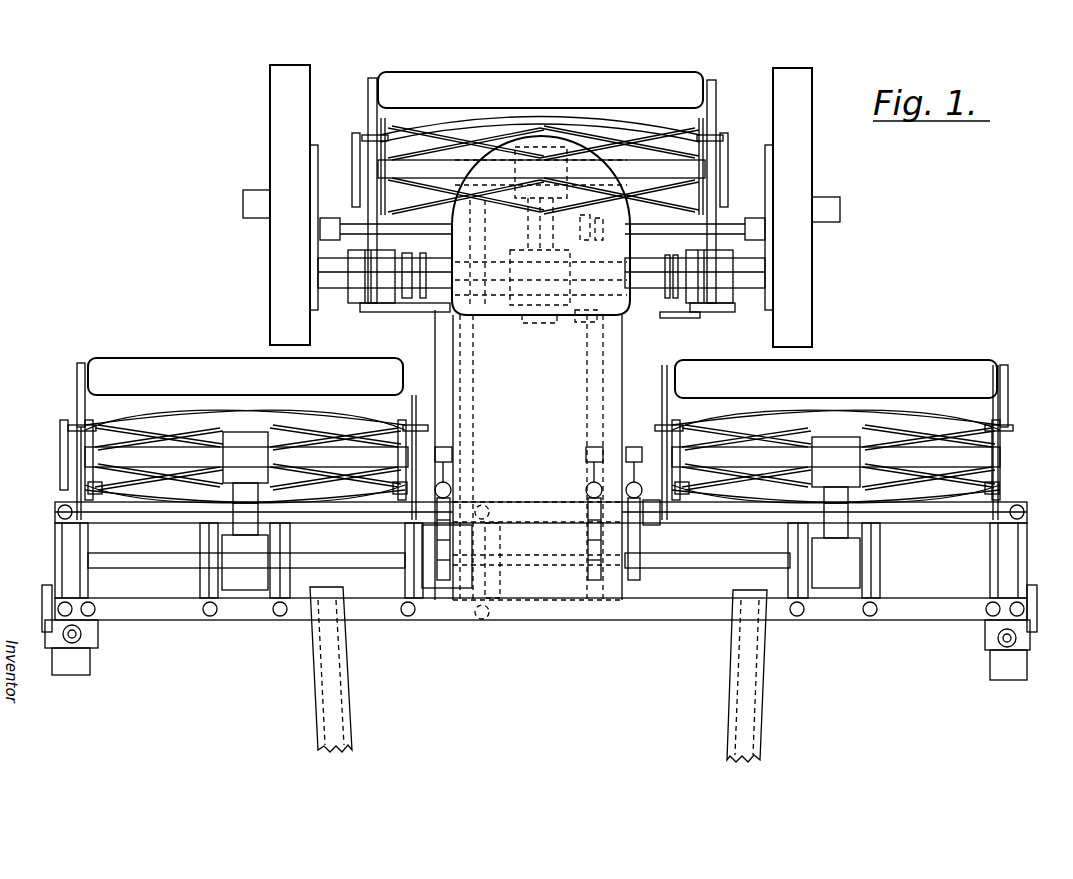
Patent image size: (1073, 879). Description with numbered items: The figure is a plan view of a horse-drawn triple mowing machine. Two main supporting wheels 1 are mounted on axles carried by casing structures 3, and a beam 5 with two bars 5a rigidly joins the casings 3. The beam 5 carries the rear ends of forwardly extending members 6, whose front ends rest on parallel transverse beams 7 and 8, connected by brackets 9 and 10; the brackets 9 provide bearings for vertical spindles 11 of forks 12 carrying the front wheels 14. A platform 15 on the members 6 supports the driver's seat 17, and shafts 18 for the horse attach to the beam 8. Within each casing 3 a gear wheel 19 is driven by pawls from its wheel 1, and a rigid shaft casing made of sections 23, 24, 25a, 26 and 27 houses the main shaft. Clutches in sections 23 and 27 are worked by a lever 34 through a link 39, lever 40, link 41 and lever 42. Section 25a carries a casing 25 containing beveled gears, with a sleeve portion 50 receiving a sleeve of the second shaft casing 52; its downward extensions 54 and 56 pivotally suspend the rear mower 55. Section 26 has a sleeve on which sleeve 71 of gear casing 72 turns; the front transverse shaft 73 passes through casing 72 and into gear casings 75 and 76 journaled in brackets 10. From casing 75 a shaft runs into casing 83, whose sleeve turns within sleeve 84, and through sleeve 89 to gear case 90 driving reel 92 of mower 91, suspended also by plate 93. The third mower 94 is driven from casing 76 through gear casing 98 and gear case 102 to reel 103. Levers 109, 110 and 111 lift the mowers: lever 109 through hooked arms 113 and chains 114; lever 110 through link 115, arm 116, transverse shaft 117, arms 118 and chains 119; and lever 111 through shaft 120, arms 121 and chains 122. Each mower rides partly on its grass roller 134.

The main supporting wheels 1 is at (272, 275).
The casing structures 3 is at (318, 162).
The beam 5 is at (336, 292).
The bars 5a is at (353, 223).
The forwardly extending members 6 is at (450, 333).
The transverse beam 7 is at (738, 524).
The transverse beam 8 is at (178, 620).
The brackets 9 is at (58, 542).
The brackets 10 is at (200, 568).
The vertical spindles 11 is at (65, 636).
The forks 12 is at (43, 598).
The wheels 14 is at (80, 660).
The platform 15 is at (537, 519).
The driver's seat 17 is at (541, 140).
The shafts 18 is at (350, 680).
The gear wheel 19 is at (1000, 662).
The shaft casing section 23 is at (723, 296).
The shaft casing section 24 is at (657, 281).
The casing 25 is at (515, 256).
The shaft casing section 25a is at (585, 322).
The shaft casing section 26 is at (425, 290).
The shaft casing section 27 is at (362, 295).
The lever 34 is at (692, 312).
The link 39 is at (672, 320).
The lever 40 is at (530, 318).
The link 41 is at (390, 312).
The lever 42 is at (368, 312).
The sleeve portion 50 is at (528, 213).
The second shaft casing 52 is at (515, 168).
The downward extension 54 is at (728, 188).
The mower 55 is at (497, 64).
The downward extension 56 is at (356, 182).
The sleeve 71 is at (437, 360).
The gear casing 72 is at (430, 547).
The front transverse shaft 73 is at (350, 562).
The gear casing 75 is at (245, 562).
The gear casing 76 is at (836, 563).
The casing 83 is at (245, 457).
The sleeve 84 is at (245, 509).
The sleeve 89 is at (246, 457).
The gear case 90 is at (62, 463).
The mower 91 is at (64, 395).
The reel 92 is at (180, 410).
The plate 93 is at (430, 428).
The third mower 94 is at (1020, 396).
The gear casing 98 is at (836, 487).
The gear case 102 is at (662, 415).
The reel 103 is at (800, 412).
The lever 109 is at (452, 487).
The lever 110 is at (586, 488).
The lever 111 is at (648, 524).
The hooked arms 113 is at (77, 480).
The chains 114 is at (68, 428).
The link 115 is at (586, 393).
The arm 116 is at (586, 218).
The transverse shaft 117 is at (484, 226).
The arms 118 is at (368, 170).
The chains 119 is at (372, 136).
The shaft 120 is at (933, 518).
The projecting arms 121 is at (1000, 452).
The chains 122 is at (682, 424).
The grass rollers 134 is at (582, 73).